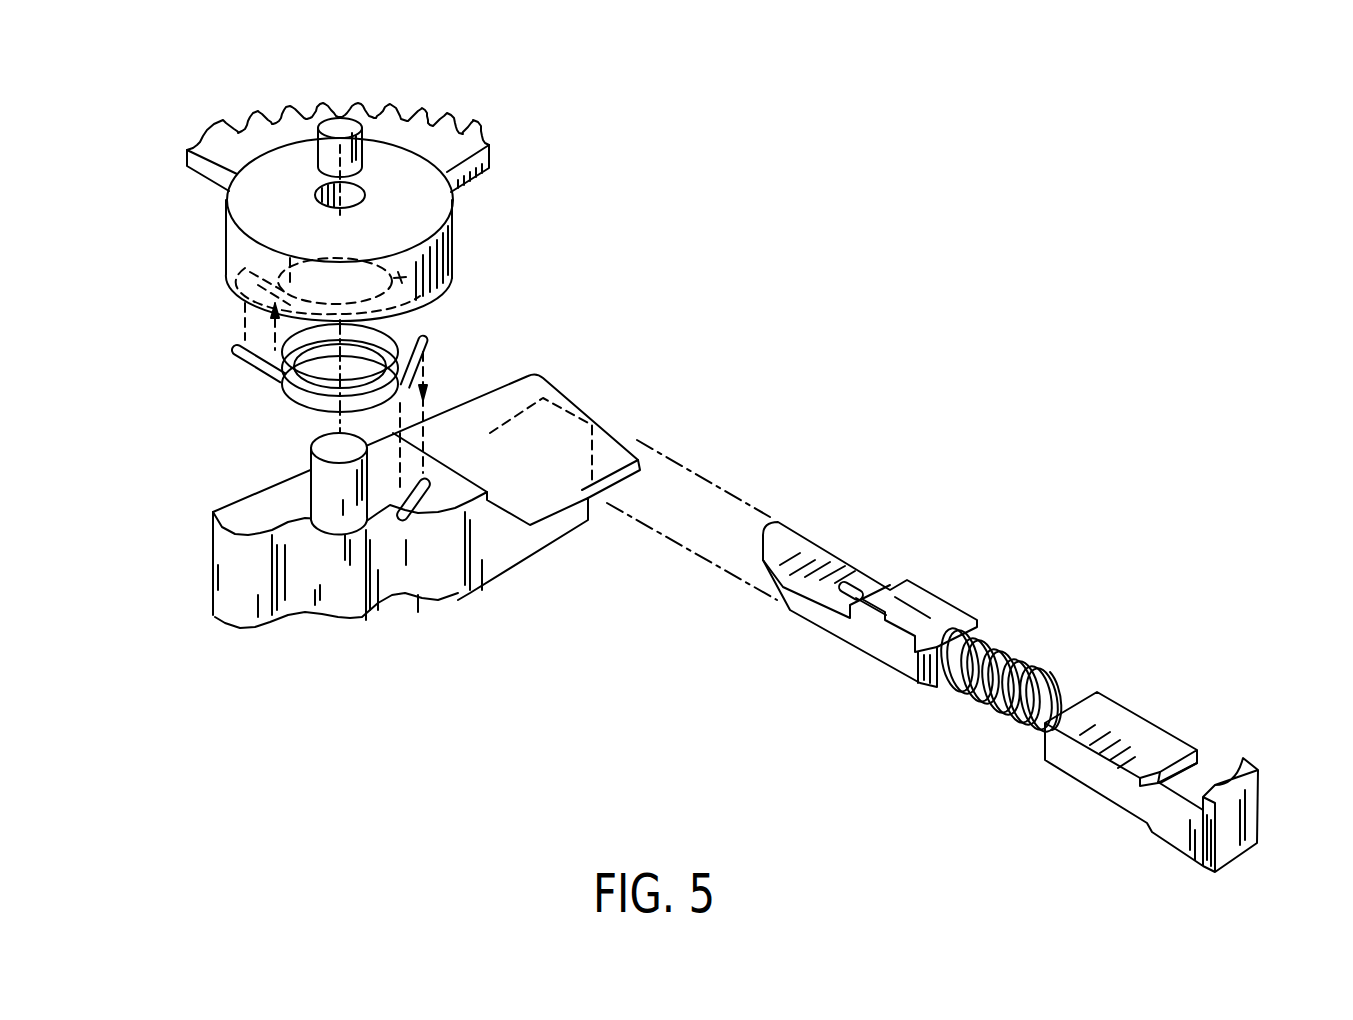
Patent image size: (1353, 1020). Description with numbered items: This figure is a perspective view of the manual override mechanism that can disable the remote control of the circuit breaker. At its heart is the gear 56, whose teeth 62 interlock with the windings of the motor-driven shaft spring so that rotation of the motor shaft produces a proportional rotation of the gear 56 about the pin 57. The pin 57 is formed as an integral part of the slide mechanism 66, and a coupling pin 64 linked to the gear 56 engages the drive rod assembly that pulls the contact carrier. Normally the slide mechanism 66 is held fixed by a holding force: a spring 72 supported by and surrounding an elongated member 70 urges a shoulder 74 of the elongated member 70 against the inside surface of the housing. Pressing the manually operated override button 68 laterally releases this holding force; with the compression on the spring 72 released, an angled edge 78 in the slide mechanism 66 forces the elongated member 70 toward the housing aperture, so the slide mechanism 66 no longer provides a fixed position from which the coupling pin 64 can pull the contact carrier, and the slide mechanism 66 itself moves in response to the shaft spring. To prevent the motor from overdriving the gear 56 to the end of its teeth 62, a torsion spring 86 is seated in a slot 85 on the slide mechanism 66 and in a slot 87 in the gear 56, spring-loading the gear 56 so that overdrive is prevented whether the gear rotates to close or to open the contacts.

The gear 56 is at (457, 236).
The pin 57 is at (322, 443).
The teeth 62 is at (426, 132).
The coupling pin 64 is at (332, 153).
The slide mechanism 66 is at (503, 573).
The override button 68 is at (1266, 810).
The elongated member 70 is at (1043, 682).
The spring 72 is at (993, 642).
The shoulder 74 is at (1205, 764).
The angled edge 78 is at (603, 457).
The slot 85 is at (405, 515).
The torsion spring 86 is at (241, 360).
The slot 87 is at (440, 298).